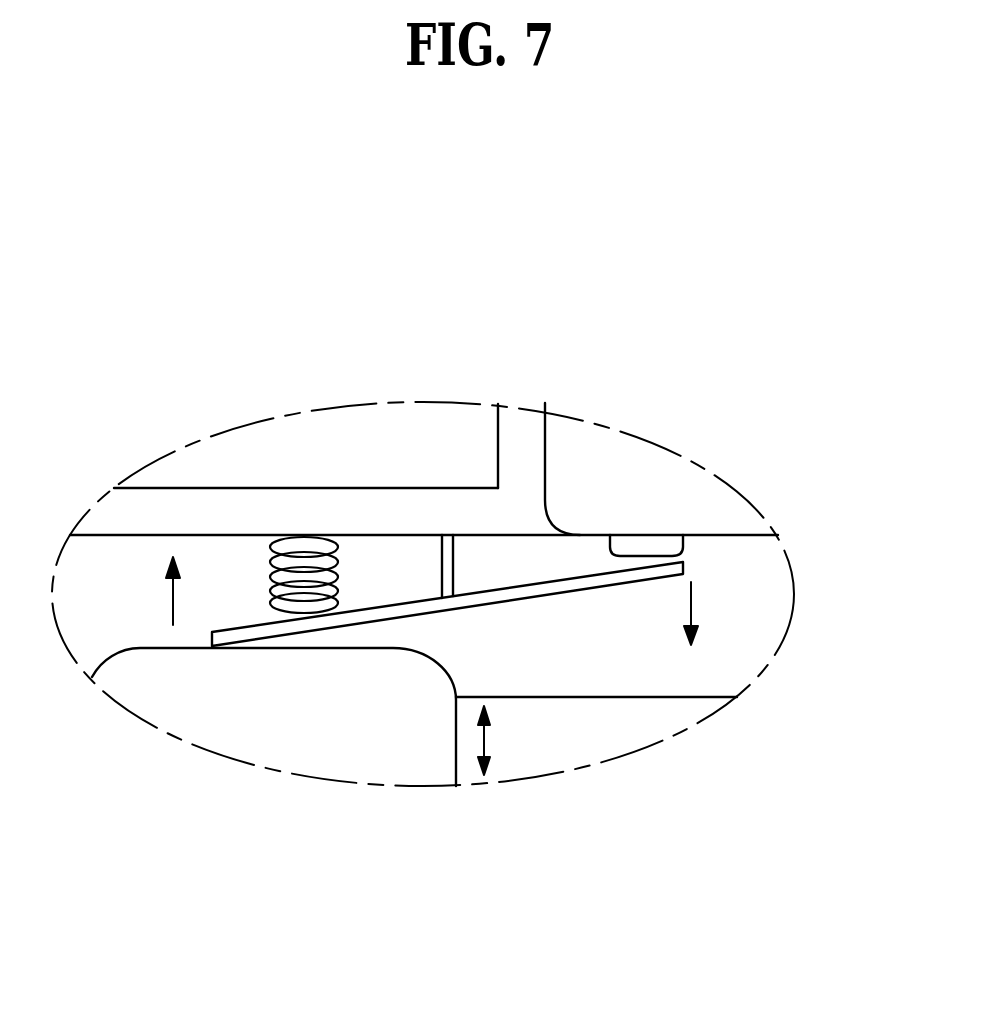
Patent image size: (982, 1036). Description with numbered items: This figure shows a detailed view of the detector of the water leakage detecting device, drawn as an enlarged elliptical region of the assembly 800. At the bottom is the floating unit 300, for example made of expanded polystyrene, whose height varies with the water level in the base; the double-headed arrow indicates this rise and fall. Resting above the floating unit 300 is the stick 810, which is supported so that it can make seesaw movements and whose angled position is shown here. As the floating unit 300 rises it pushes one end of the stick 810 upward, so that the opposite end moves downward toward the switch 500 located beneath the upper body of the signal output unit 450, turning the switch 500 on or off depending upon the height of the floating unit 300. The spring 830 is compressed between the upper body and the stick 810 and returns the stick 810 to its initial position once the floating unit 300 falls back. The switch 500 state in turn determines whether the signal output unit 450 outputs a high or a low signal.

The floating unit 300 is at (297, 727).
The signal output unit 450 is at (687, 487).
The switch 500 is at (657, 545).
The latch assembly 800 is at (541, 400).
The stick 810 is at (522, 587).
The spring 830 is at (305, 537).